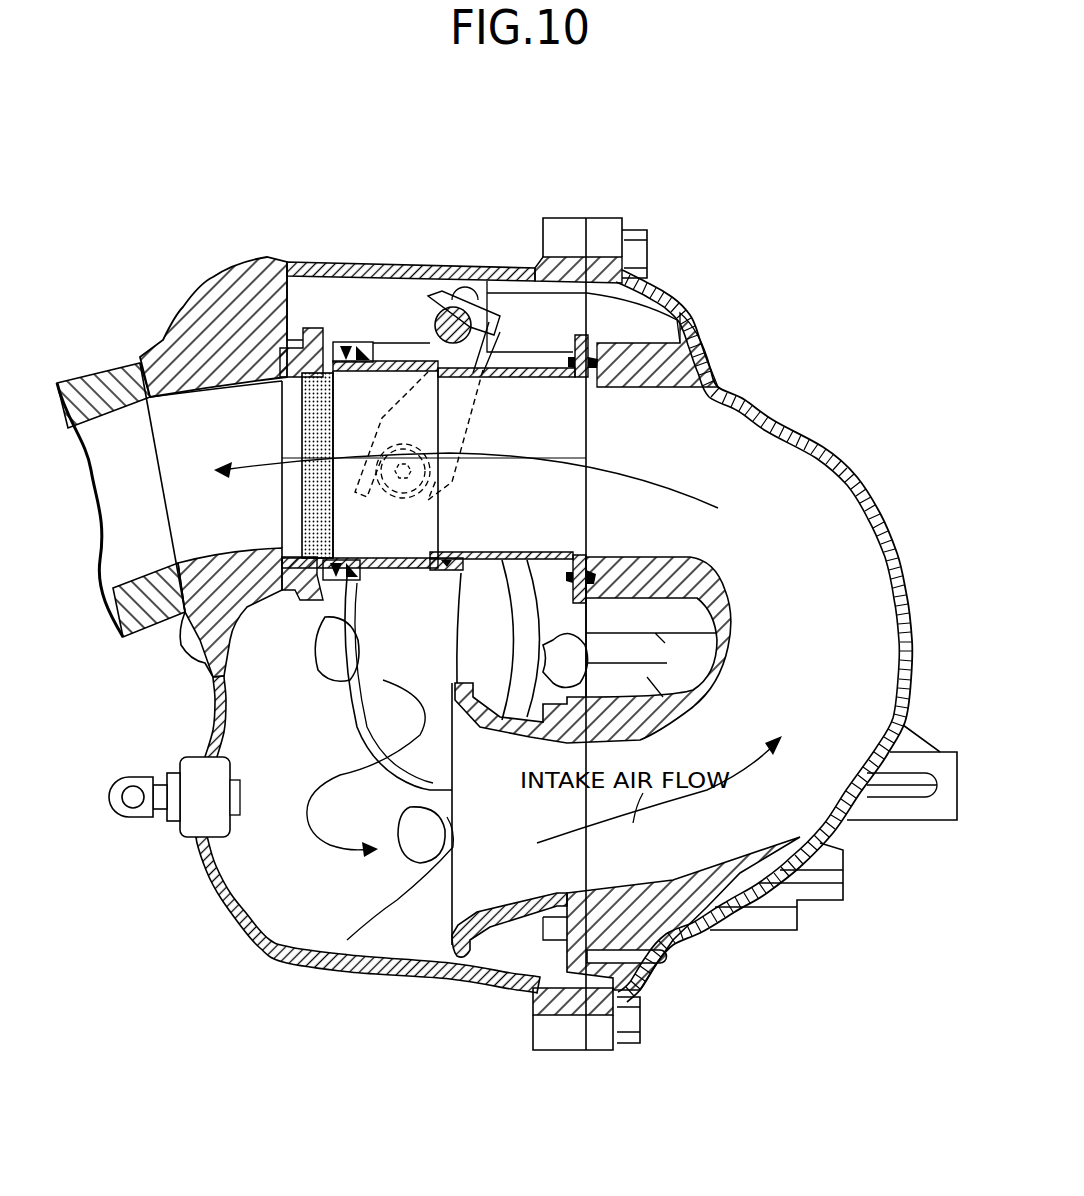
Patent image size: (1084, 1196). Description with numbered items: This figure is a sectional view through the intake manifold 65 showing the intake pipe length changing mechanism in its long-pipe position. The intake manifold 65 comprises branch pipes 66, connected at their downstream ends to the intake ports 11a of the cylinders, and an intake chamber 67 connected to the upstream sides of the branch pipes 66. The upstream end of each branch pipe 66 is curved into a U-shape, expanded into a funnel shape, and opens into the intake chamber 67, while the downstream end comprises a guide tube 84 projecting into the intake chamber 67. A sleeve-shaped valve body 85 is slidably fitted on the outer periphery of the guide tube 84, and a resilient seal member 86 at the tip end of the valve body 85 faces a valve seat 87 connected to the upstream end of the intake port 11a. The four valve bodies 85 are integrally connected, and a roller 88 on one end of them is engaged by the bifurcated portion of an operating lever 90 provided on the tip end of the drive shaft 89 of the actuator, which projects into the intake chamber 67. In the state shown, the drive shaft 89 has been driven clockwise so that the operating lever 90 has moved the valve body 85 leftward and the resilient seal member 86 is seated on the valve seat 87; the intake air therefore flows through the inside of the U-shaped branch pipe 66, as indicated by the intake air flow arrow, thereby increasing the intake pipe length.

The intake manifold 65 is at (402, 258).
The branch pipe 66 is at (887, 543).
The intake chamber 67 is at (310, 773).
The intake port 11a is at (102, 417).
The guide tube 84 is at (490, 561).
The valve body 85 is at (404, 570).
The resilient seal member 86 is at (342, 345).
The valve seat 87 is at (302, 355).
The roller 88 is at (392, 486).
The drive shaft 89 is at (443, 308).
The operating lever 90 is at (458, 413).